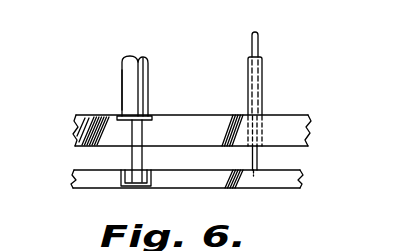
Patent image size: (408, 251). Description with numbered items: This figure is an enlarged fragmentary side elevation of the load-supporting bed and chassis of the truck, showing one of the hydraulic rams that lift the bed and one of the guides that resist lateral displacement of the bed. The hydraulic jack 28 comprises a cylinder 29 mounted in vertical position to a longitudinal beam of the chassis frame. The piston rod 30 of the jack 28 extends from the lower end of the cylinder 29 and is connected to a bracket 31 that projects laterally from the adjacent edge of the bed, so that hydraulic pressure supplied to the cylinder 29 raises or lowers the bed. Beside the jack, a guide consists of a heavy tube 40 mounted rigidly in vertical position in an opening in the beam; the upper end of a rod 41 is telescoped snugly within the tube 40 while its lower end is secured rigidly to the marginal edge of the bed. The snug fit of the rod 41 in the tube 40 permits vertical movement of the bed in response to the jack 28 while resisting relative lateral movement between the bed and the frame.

The hydraulic jack 28 is at (152, 100).
The cylinder 29 is at (122, 91).
The piston rod 30 is at (132, 153).
The bracket 31 is at (145, 190).
The tube 40 is at (262, 106).
The rod 41 is at (258, 161).